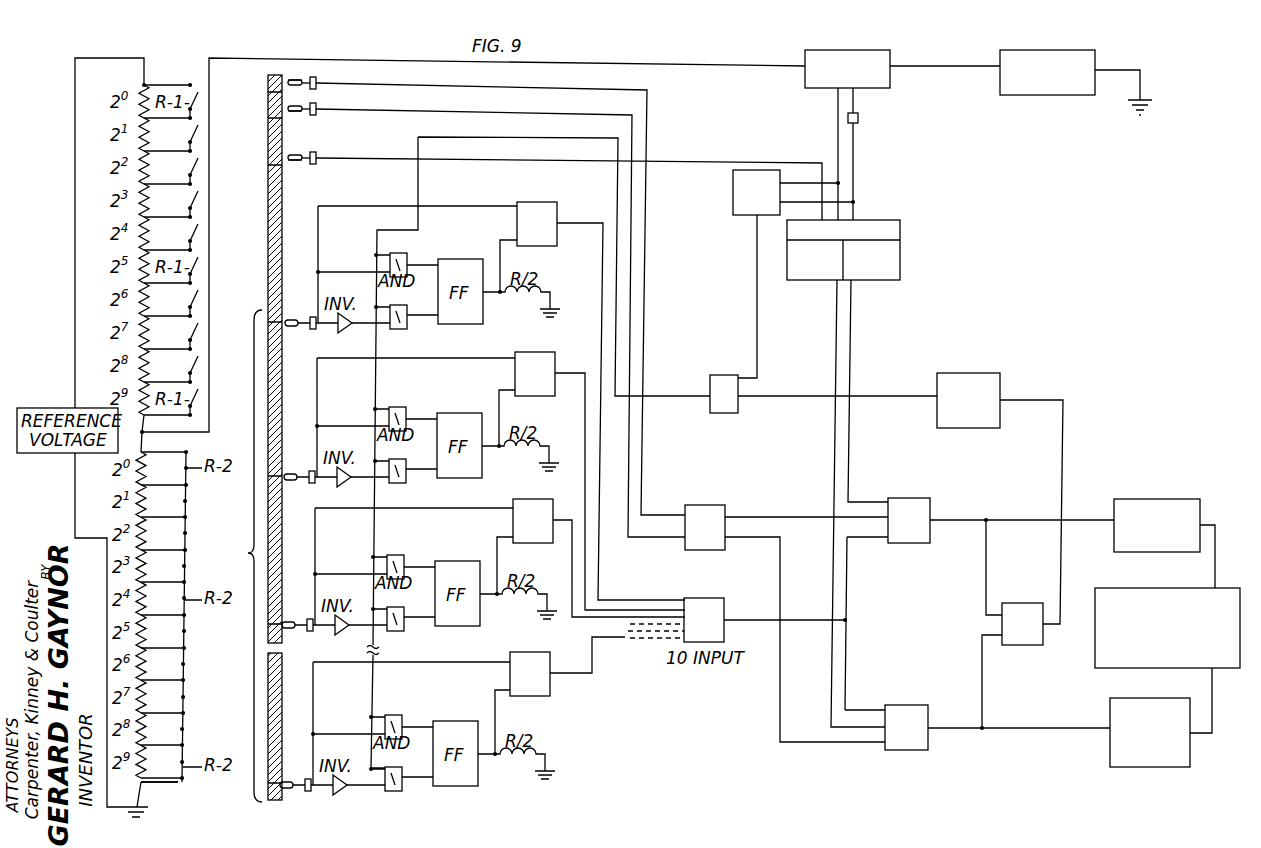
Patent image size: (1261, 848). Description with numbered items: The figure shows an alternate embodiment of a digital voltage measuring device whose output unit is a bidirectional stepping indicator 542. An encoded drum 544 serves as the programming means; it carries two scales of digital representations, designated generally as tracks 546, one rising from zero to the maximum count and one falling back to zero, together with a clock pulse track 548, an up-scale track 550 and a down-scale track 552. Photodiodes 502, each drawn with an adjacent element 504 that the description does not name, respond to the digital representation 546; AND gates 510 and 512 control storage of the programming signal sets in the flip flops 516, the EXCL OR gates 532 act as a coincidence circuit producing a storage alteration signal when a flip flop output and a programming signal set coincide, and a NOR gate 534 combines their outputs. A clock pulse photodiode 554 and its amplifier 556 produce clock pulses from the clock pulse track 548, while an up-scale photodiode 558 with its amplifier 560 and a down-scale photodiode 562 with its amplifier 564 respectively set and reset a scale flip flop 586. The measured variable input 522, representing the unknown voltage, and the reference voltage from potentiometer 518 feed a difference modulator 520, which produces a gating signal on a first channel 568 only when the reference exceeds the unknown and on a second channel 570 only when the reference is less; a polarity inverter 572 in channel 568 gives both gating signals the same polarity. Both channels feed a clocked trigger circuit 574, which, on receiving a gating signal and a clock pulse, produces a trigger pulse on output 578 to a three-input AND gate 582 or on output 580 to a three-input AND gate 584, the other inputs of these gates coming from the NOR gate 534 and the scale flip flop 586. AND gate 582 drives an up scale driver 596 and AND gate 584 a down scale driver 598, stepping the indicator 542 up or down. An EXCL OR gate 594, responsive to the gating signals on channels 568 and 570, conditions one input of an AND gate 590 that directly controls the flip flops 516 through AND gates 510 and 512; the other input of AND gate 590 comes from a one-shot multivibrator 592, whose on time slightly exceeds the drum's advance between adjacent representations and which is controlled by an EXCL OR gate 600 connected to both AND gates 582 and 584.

The photodiodes 502 is at (290, 317).
The movable contact 504 is at (314, 329).
The AND gate 510 is at (403, 257).
The AND gate 512 is at (402, 327).
The flip flops 516 is at (483, 316).
The potentiometer 518 is at (178, 782).
The difference modulator 520 is at (858, 52).
The input 522 is at (1093, 52).
The EXCL OR gates 532 is at (550, 246).
The NOR gate 534 is at (703, 597).
The bidirectional stepping indicator 542 is at (1162, 588).
The encoded drum 544 is at (268, 290).
The tracks 546 is at (245, 556).
The clock pulse track 548 is at (268, 159).
The up-scale track 550 is at (268, 84).
The down-scale track 552 is at (268, 110).
The clock pulse photodiode 554 is at (295, 162).
The amplifier 556 is at (316, 154).
The up-scale photodiode 558 is at (297, 113).
The amplifier 560 is at (316, 113).
The down-scale photodiode 562 is at (300, 79).
The amplifier 564 is at (316, 86).
The first channel 568 is at (858, 106).
The second channel 570 is at (835, 134).
The polarity inverter 572 is at (858, 120).
The clocked trigger circuit 574 is at (900, 234).
The output 578 is at (852, 336).
The output 580 is at (835, 352).
The three-input AND gate 582 is at (902, 497).
The three-input AND gate 584 is at (922, 752).
The scale flip flop 586 is at (704, 504).
The AND gate 590 is at (725, 375).
The one-shot multivibrator 592 is at (993, 373).
The EXCL OR gate 594 is at (731, 192).
The up scale driver 596 is at (1150, 497).
The down scale driver 598 is at (1152, 767).
The EXCL OR gate 600 is at (1020, 645).